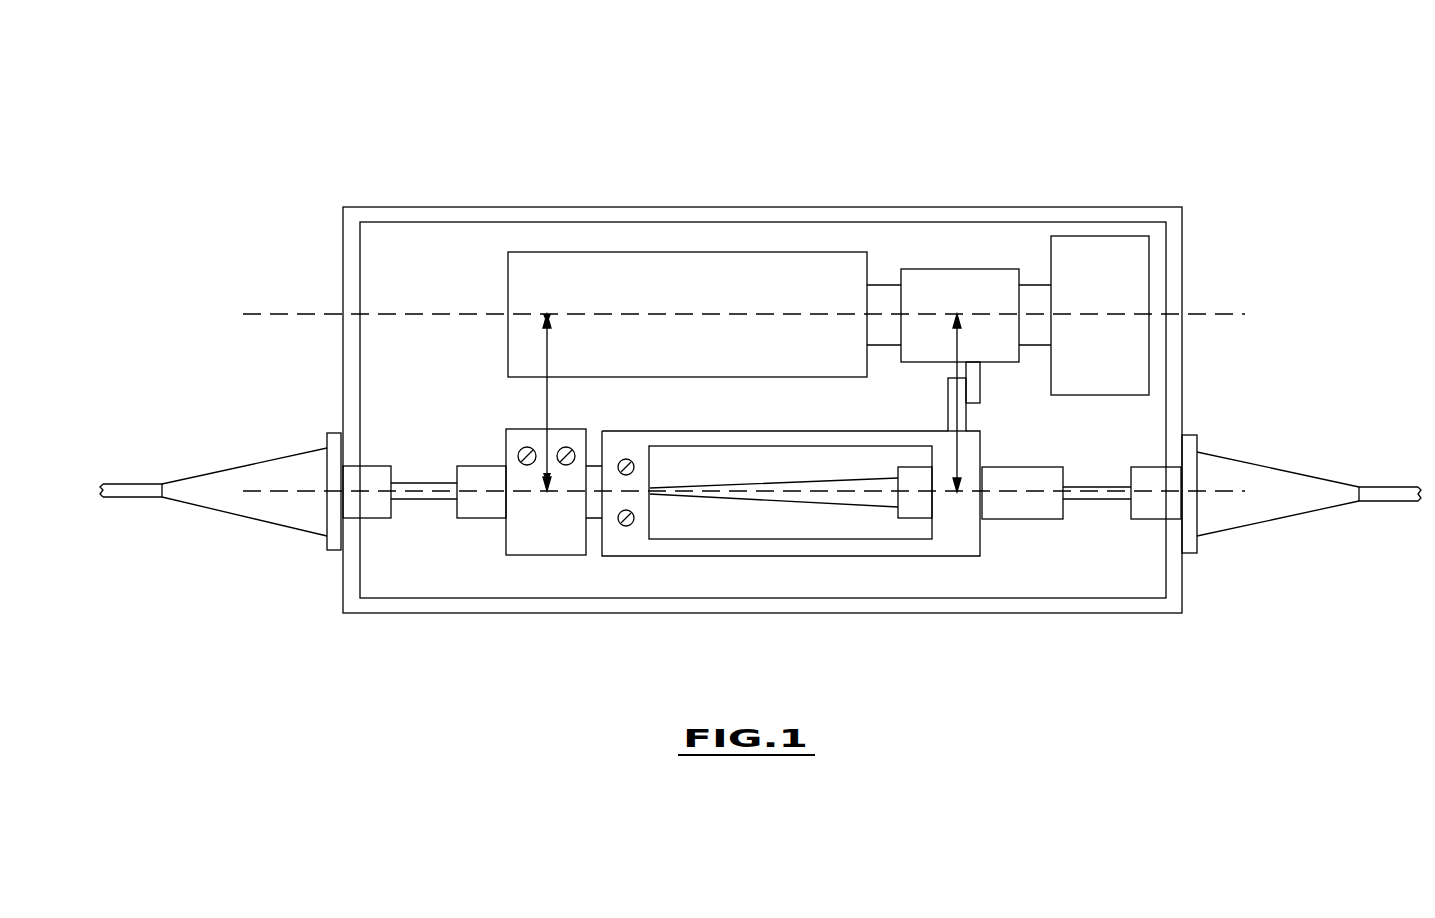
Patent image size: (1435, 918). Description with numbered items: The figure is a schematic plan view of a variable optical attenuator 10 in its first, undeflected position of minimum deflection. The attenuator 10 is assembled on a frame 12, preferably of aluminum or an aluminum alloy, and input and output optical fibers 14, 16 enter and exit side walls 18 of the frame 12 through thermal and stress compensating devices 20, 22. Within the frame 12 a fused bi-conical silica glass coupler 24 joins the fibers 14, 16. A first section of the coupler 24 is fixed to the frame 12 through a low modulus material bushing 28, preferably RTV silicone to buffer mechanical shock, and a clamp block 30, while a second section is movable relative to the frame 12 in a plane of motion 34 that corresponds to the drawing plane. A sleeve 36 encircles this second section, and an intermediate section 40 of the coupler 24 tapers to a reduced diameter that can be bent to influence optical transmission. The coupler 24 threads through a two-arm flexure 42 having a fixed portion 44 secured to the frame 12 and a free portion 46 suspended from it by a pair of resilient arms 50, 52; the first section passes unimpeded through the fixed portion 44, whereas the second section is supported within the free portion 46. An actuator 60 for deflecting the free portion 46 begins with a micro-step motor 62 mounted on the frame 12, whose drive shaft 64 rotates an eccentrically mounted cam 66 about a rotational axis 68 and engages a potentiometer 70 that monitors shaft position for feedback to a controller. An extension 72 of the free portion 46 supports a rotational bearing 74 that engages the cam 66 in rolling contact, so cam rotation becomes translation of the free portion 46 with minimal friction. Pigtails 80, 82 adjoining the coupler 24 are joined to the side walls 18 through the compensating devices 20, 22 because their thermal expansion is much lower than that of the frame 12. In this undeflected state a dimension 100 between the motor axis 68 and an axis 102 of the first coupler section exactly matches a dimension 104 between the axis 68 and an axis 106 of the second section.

The variable optical attenuator 10 is at (436, 122).
The frame 12 is at (1122, 573).
The input optical fiber 14 is at (1390, 487).
The output optical fiber 16 is at (132, 482).
The side walls 18 is at (343, 268).
The thermal and stress compensating device 20 is at (1154, 467).
The thermal and stress compensating device 22 is at (372, 466).
The fused bi-conical silica glass coupler 24 is at (786, 476).
The low modulus material bushing 28 is at (490, 519).
The clamp block 30 is at (506, 456).
The plane of motion 34 is at (1062, 584).
The sleeve 36 is at (998, 467).
The intermediate section 40 is at (693, 495).
The two-arm flexure 42 is at (832, 559).
The fixed portion 44 is at (646, 406).
The free portion 46 is at (963, 552).
The resilient arm 50 is at (866, 431).
The resilient arm 52 is at (812, 548).
The actuator 60 is at (796, 250).
The micro-step motor 62 is at (681, 295).
The drive shaft 64 is at (1040, 283).
The eccentrically mounted cam 66 is at (938, 269).
The rotational axis 68 is at (487, 313).
The potentiometer 70 is at (1117, 376).
The extension 72 is at (948, 402).
The rotational bearing 74 is at (982, 391).
The pigtail 80 is at (1093, 502).
The pigtail 82 is at (430, 499).
The dimension 100 is at (547, 403).
The axis of the first section 102 is at (518, 492).
The dimension 104 is at (950, 380).
The axis of the second section 106 is at (998, 495).